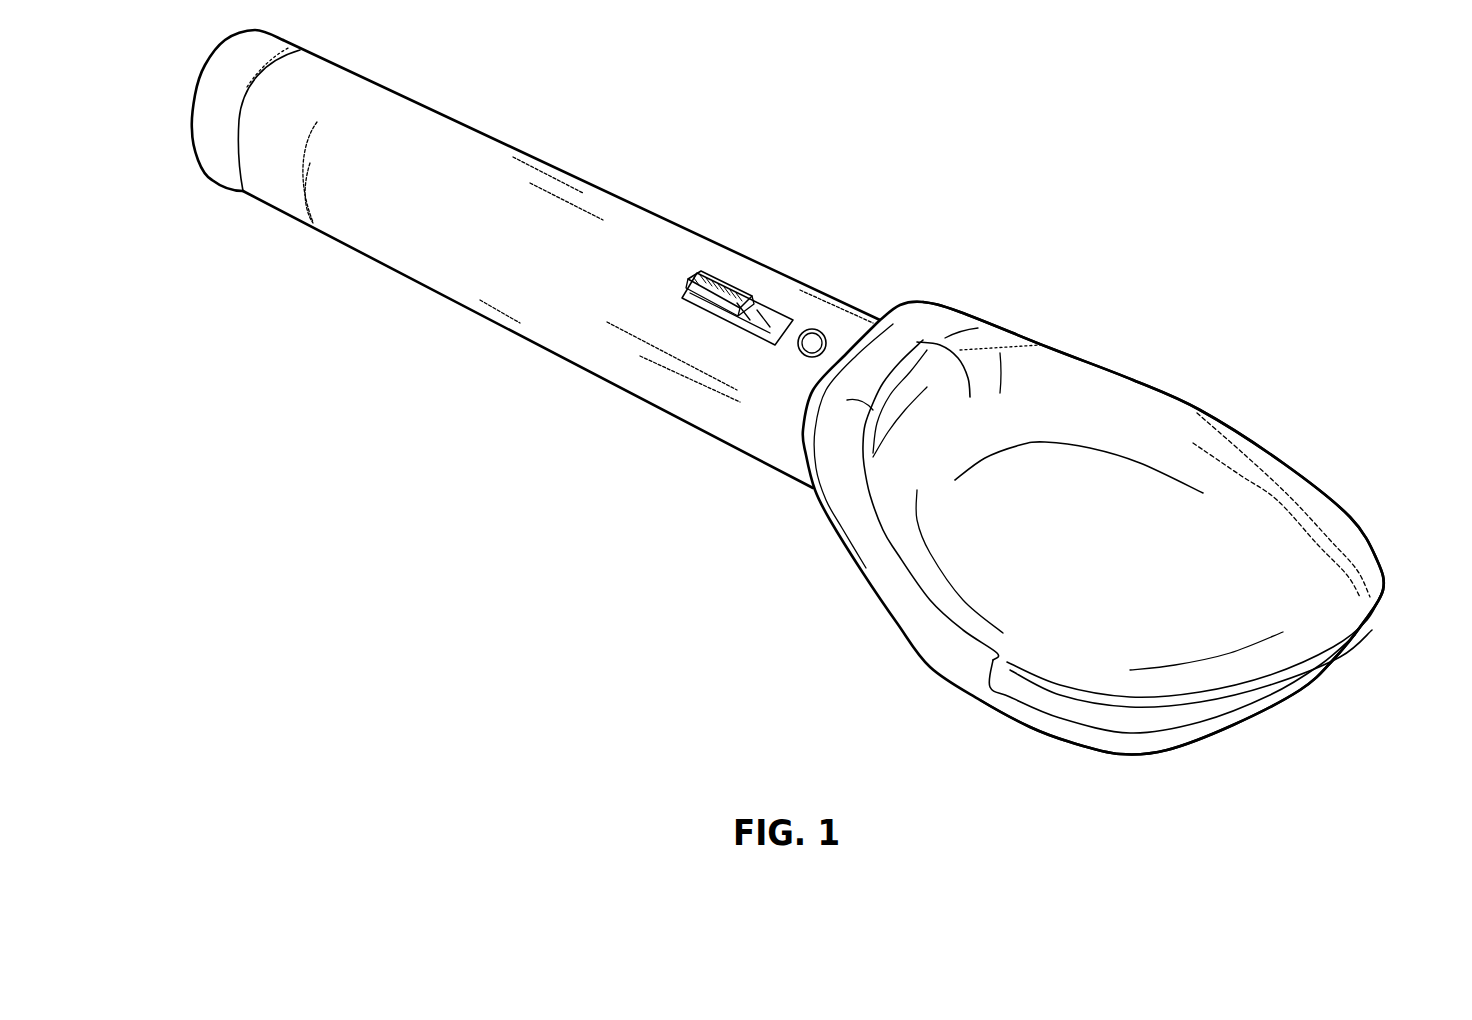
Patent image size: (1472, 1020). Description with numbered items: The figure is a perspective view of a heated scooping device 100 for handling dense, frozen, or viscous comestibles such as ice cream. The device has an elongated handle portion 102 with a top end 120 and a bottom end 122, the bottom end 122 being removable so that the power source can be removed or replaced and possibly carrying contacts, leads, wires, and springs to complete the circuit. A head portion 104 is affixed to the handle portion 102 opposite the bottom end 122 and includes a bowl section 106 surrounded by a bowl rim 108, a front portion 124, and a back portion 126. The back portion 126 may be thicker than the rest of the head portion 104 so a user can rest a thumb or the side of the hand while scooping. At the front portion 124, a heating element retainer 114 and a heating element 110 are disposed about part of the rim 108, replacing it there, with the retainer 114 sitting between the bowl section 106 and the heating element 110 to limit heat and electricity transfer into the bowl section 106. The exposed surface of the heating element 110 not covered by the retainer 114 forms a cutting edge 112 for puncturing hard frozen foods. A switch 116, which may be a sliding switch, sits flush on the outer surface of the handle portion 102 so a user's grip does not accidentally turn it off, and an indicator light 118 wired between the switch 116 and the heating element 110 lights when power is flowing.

The heated scooping device 100 is at (1005, 133).
The handle portion 102 is at (323, 238).
The head portion 104 is at (893, 625).
The bowl section 106 is at (1030, 598).
The bowl rim 108 is at (1133, 380).
The heating element 110 is at (1227, 433).
The cutting edge 112 is at (1340, 645).
The heating element retainer 114 is at (1038, 698).
The switch 116 is at (725, 295).
The indicator light 118 is at (808, 352).
The top end 120 is at (837, 318).
The bottom end 122 is at (215, 118).
The front portion 124 is at (1263, 727).
The back portion 126 is at (897, 362).